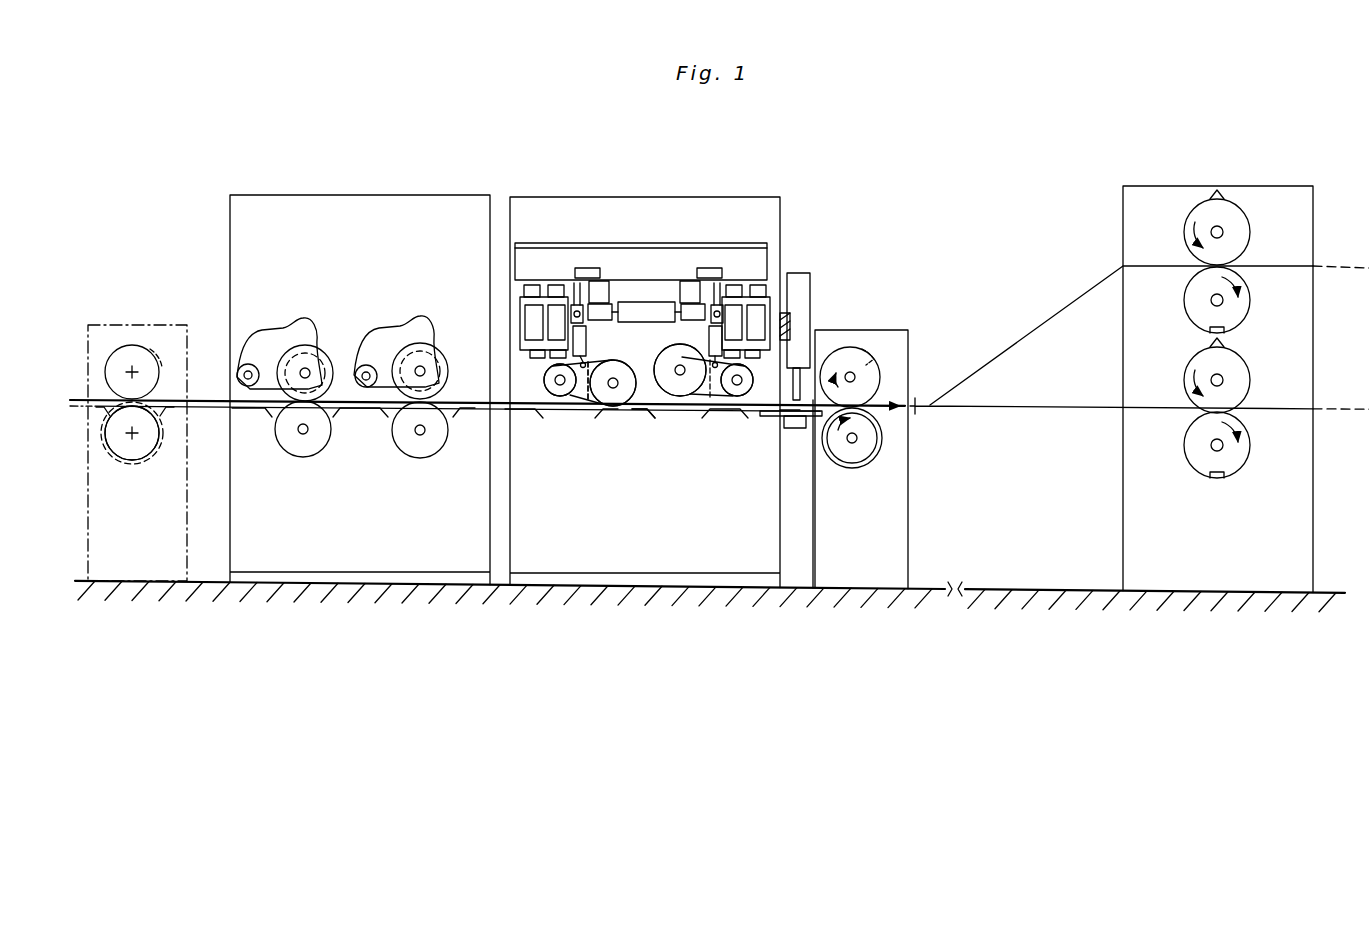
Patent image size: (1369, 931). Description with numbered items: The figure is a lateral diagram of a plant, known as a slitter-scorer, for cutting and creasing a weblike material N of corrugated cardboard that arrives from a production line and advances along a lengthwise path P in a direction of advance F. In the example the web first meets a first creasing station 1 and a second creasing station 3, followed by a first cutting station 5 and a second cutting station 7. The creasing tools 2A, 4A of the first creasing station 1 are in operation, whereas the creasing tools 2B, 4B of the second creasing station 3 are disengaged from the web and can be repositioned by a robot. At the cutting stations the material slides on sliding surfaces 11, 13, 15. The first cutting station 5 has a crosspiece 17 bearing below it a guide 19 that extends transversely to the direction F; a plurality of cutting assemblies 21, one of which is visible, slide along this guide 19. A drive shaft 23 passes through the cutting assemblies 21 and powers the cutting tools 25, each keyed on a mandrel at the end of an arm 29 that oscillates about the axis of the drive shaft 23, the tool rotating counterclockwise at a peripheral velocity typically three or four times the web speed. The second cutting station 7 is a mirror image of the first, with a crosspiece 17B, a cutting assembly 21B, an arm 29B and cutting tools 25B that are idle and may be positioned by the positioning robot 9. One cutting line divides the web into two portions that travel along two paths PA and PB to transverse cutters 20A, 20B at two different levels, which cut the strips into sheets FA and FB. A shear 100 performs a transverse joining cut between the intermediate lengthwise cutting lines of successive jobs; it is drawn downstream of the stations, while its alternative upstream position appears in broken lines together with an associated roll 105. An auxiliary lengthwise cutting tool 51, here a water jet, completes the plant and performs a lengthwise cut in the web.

The shear 100 is at (160, 322).
The paper roll 105 is at (146, 468).
The weblike material N is at (200, 401).
The first creasing station 1 is at (301, 301).
The creasing tool 2A is at (327, 346).
The second creasing station 3 is at (399, 301).
The creasing tool 2B is at (440, 346).
The lengthwise path P is at (476, 393).
The creasing tool 4A is at (314, 460).
The creasing tool 4B is at (425, 460).
The sliding surface 11 is at (492, 455).
The crosspiece 17 is at (562, 300).
The positioning robot 9 is at (640, 299).
The crosspiece 17B is at (742, 300).
The auxiliary lengthwise cutting tool 51 is at (800, 292).
The guide 19 is at (583, 347).
The cutting assembly 21 is at (539, 371).
The first cutting station 5 is at (629, 355).
The cutting assembly 21B is at (766, 368).
The drive shaft 23 is at (553, 393).
The arm 29 is at (580, 398).
The cutting tool 25 is at (605, 408).
The sliding surface 13 is at (652, 416).
The arm 29B is at (738, 396).
The cutting tool 25B is at (680, 396).
The second cutting station 7 is at (673, 446).
The sliding surface 15 is at (760, 432).
The direction of advance F is at (888, 417).
The path PA is at (1012, 340).
The path PB is at (1055, 410).
The transverse cutter 20A is at (1258, 250).
The sheet FA is at (1298, 268).
The transverse cutter 20B is at (1258, 390).
The sheet FB is at (1300, 412).